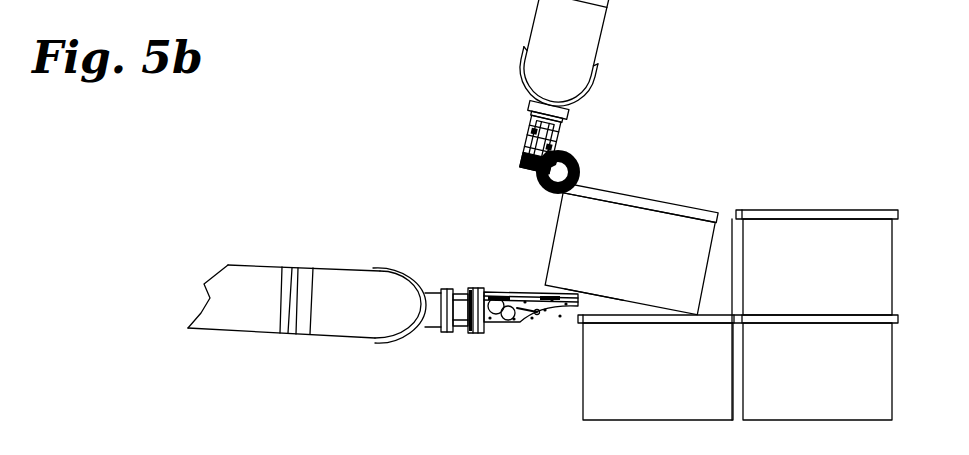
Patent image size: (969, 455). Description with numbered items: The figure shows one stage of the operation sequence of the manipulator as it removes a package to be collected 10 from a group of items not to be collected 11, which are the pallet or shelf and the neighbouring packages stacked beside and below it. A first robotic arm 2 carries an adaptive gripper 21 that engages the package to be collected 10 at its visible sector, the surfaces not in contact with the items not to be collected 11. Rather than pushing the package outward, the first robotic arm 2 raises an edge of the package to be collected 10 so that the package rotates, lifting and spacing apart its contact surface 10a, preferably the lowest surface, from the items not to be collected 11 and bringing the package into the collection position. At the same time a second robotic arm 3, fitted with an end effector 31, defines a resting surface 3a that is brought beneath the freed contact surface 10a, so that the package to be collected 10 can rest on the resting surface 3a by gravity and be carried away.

The first robotic arm 2 is at (653, 36).
The adaptive gripper 21 is at (491, 147).
The second robotic arm 3 is at (224, 359).
The end effector 31 is at (473, 365).
The resting surface 3a is at (515, 290).
The package to be collected 10 is at (612, 276).
The contact surface 10a is at (613, 300).
The item not to be collected 11 is at (798, 281).